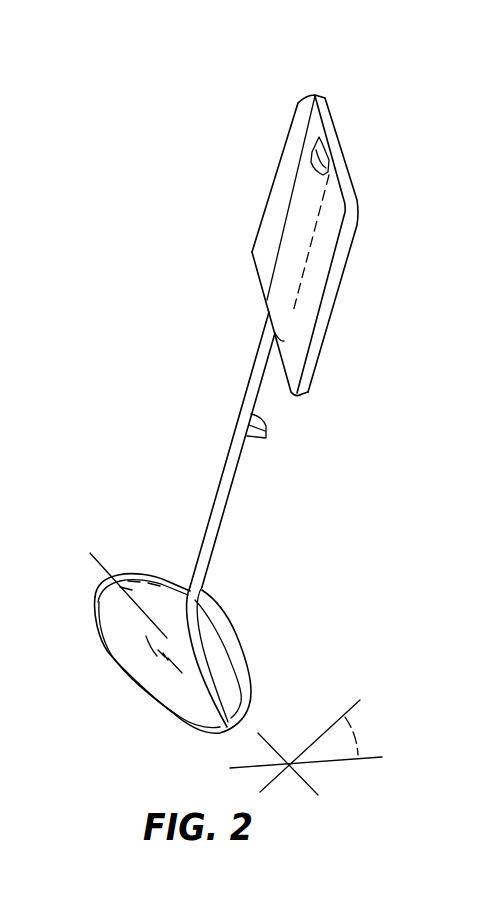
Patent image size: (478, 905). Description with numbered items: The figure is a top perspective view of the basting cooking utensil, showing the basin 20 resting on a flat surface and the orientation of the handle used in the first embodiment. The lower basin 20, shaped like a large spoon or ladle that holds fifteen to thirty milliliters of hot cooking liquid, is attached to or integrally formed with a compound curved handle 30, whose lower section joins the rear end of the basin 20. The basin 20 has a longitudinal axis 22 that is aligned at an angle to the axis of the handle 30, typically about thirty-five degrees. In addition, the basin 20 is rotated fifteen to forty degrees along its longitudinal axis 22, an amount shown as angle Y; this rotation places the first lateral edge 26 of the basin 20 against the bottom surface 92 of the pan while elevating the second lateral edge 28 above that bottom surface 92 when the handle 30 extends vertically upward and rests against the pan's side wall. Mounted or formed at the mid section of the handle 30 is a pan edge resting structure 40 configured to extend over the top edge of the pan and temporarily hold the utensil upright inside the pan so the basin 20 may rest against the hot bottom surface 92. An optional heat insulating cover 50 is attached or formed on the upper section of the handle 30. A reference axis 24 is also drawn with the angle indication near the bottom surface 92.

The basin 20 is at (124, 573).
The longitudinal axis 22 is at (92, 565).
The shaft axis 24 is at (335, 717).
The first lateral edge 26 is at (130, 680).
The second lateral edge 28 is at (223, 615).
The compound curved handle 30 is at (238, 380).
The pan edge resting structure 40 is at (282, 430).
The heat insulating cover 50 is at (287, 108).
The bottom surface 92 is at (378, 755).
The angle y Y is at (356, 733).